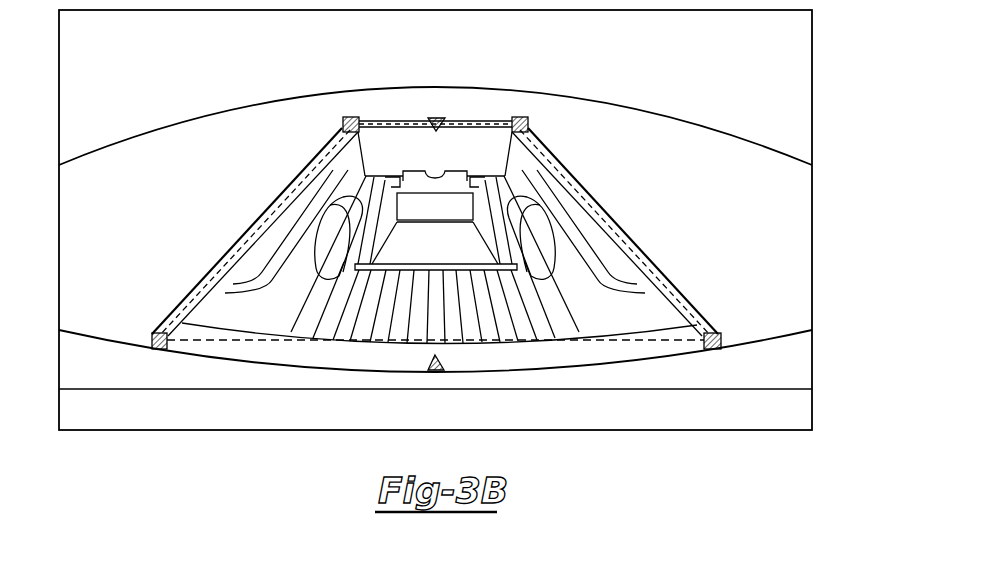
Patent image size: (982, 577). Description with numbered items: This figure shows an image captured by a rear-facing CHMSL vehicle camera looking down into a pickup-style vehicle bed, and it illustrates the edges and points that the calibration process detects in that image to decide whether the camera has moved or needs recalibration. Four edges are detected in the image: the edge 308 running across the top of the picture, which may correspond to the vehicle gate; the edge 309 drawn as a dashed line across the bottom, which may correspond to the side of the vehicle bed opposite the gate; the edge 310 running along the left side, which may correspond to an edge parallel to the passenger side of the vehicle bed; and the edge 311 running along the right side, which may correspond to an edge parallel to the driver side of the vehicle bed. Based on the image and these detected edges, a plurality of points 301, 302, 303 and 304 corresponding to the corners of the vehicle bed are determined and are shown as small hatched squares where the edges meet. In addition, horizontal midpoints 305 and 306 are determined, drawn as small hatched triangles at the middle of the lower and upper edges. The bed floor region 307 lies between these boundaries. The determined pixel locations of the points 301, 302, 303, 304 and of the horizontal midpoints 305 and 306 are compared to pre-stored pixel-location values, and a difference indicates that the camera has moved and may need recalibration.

The point corresponding to a corner of the vehicle bed 301 is at (155, 333).
The point corresponding to a corner of the vehicle bed 302 is at (716, 333).
The point corresponding to a corner of the vehicle bed 303 is at (343, 123).
The point corresponding to a corner of the vehicle bed 304 is at (528, 124).
The horizontal midpoint 305 is at (447, 366).
The horizontal midpoint 306 is at (436, 116).
The truck bed floor 307 is at (367, 313).
The edge 308 is at (386, 120).
The edge 309 is at (229, 340).
The edge 310 is at (268, 200).
The edge 311 is at (604, 205).